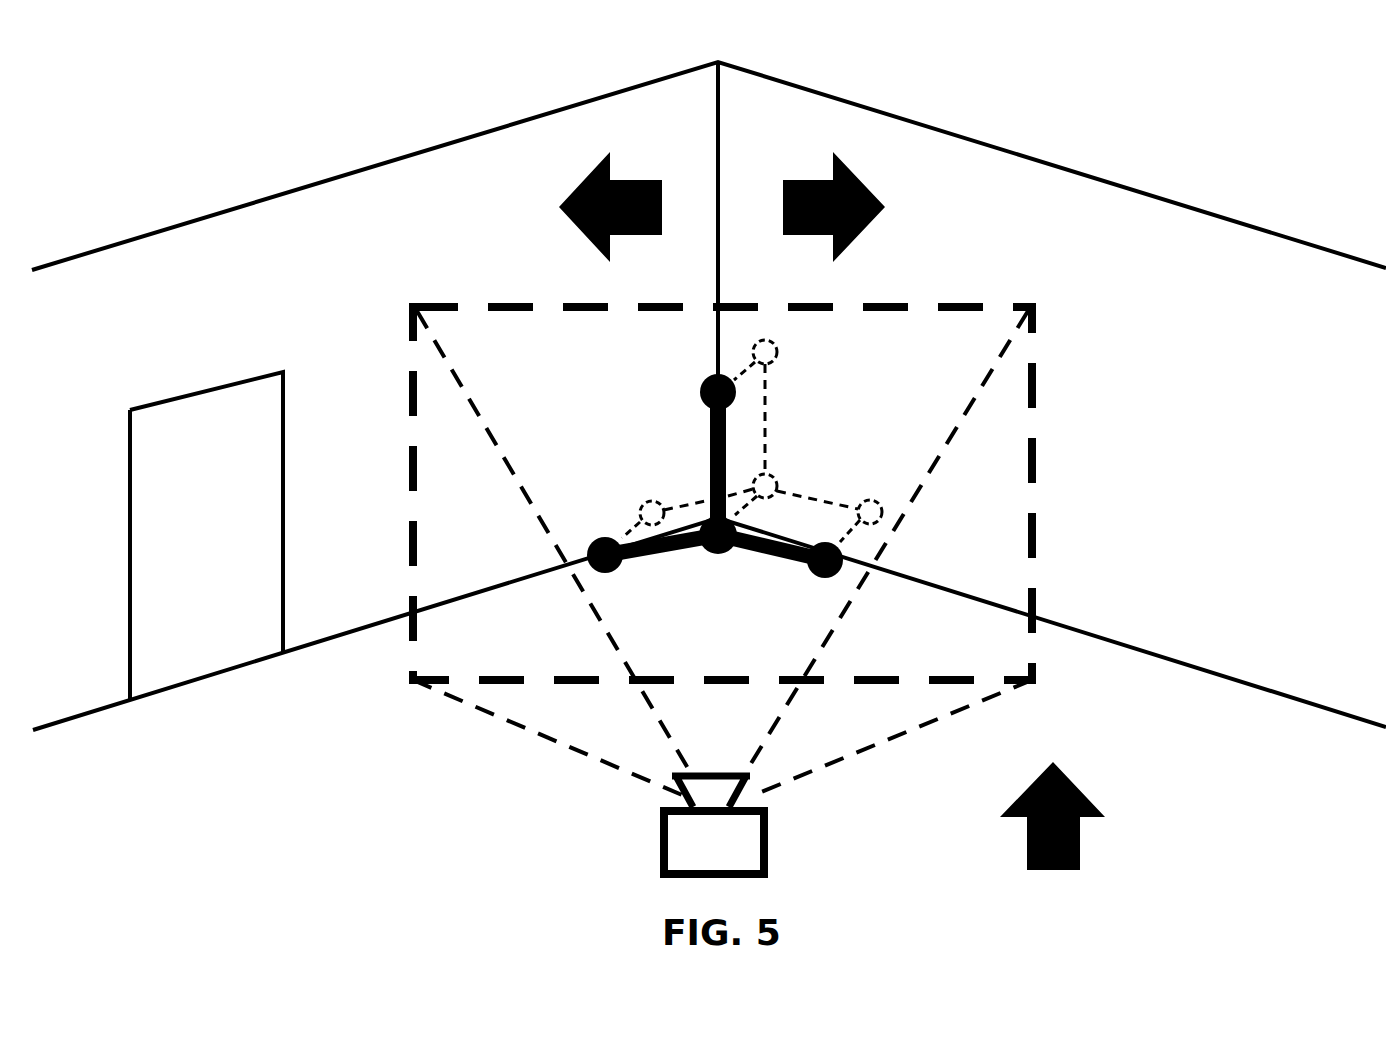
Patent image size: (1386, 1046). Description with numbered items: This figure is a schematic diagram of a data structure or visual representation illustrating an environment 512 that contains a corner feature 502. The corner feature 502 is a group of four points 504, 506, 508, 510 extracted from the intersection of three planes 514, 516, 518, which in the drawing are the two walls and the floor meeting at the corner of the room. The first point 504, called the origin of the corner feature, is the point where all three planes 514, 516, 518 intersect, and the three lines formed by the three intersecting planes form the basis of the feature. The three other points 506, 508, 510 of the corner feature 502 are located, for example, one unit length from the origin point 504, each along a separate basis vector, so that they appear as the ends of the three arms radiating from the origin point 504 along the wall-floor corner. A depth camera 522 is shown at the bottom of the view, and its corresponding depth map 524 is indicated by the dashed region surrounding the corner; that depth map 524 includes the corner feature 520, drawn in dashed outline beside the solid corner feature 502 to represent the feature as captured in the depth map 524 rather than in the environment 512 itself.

The corner feature 502 is at (708, 442).
The first point 504 is at (717, 558).
The point 506 is at (596, 535).
The point 508 is at (706, 386).
The point 510 is at (810, 582).
The environment 512 is at (1135, 184).
The plane 514 is at (582, 183).
The plane 516 is at (878, 182).
The plane 518 is at (1086, 791).
The corner feature 520 is at (773, 406).
The depth camera 522 is at (777, 834).
The depth map 524 is at (1040, 381).